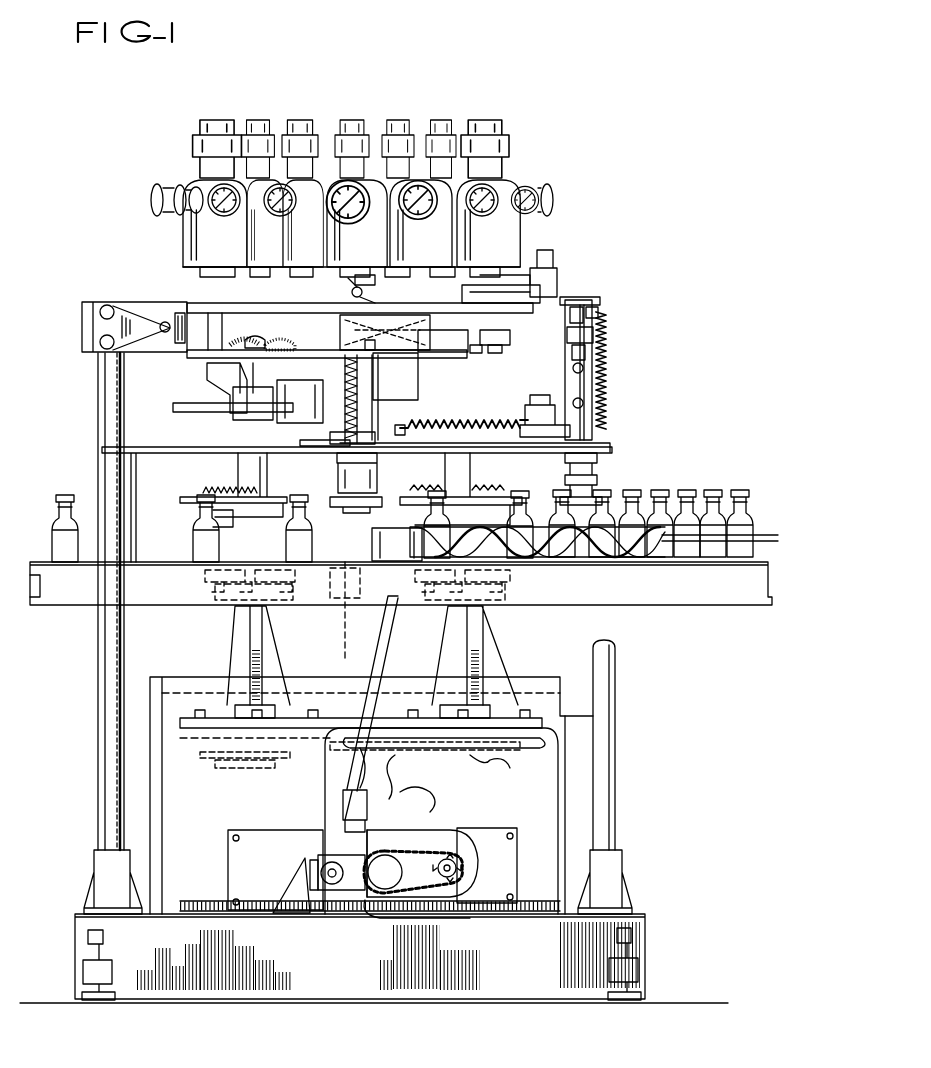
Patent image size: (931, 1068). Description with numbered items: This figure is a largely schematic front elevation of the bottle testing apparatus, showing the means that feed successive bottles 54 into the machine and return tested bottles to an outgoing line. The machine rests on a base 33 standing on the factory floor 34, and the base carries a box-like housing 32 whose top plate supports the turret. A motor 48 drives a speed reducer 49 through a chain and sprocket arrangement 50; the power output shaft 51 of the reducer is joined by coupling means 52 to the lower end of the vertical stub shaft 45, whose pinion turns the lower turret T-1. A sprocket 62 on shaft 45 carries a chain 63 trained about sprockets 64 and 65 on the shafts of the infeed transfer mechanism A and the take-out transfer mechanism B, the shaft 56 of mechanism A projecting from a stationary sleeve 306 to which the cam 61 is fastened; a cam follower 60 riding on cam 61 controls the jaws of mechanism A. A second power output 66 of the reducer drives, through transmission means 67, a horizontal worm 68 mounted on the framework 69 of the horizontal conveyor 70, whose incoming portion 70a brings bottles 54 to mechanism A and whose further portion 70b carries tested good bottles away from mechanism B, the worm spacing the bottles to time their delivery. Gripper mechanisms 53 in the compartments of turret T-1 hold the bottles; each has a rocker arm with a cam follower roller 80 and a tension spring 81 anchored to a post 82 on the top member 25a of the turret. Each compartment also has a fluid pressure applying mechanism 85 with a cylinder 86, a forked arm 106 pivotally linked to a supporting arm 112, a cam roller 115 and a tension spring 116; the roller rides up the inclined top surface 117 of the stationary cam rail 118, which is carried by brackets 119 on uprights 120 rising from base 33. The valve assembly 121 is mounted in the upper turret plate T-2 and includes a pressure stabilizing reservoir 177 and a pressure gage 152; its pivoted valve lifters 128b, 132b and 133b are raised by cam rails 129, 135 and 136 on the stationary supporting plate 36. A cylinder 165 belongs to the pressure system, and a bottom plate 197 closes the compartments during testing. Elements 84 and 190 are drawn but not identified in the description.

The pressure gage 152 is at (151, 201).
The pressure stabilizing reservoir 177 is at (193, 248).
The inclined top surface 117 is at (148, 301).
The upper turret plate T-2 is at (198, 303).
The bottom plate 197 is at (213, 345).
The cam rail 136 is at (237, 343).
The cam rail 135 is at (258, 347).
The supporting plate 36 is at (287, 350).
The brackets 119 is at (140, 333).
The stationary cam rail 118 is at (170, 352).
The actuating bar 84 is at (185, 409).
The lower turret T-1 is at (179, 446).
The bracket arm 190 is at (232, 418).
The top member 25a is at (153, 453).
The bottles 54 is at (52, 526).
The further portion of conveyor 70b is at (158, 562).
The cam follower 60 is at (205, 586).
The stationary cam 61 is at (217, 600).
The forked arm 106 is at (365, 294).
The cam roller 115 is at (600, 313).
The supporting arm 112 is at (378, 334).
The cylinder 165 is at (568, 271).
The valve lifter 128b is at (452, 354).
The tension coil spring 116 is at (360, 378).
The fluid pressure applying mechanism 85 is at (390, 401).
The anchoring post 82 is at (405, 428).
The tension coil spring 81 is at (510, 425).
The cam rail 129 is at (495, 347).
The valve lifter 133b is at (500, 340).
The valve lifter 132b is at (505, 348).
The cam follower roller 80 is at (540, 411).
The valve assembly 121 is at (529, 280).
The cylinder 86 is at (585, 390).
The gripper mechanisms 53 is at (393, 491).
The infeed transfer mechanism A is at (506, 479).
The take-out transfer mechanism B is at (210, 480).
The horizontal conveyor 70 is at (343, 557).
The rotary horizontal worm 68 is at (560, 560).
The incoming portion of conveyor 70a is at (767, 556).
The supporting framework 69 is at (682, 604).
The stationary vertical sleeve 306 is at (262, 660).
The transmission means 67 is at (390, 649).
The uprights 120 is at (98, 790).
The shaft 56 is at (215, 738).
The sprocket 65 is at (222, 755).
The sprocket 62 is at (330, 750).
The vertical stub shaft 45 is at (365, 762).
The chain 63 is at (402, 765).
The sprocket 64 is at (508, 760).
The box-like housing 32 is at (560, 769).
The coupling means 52 is at (405, 800).
The motor 48 is at (445, 845).
The second power output 66 is at (333, 845).
The power output shaft 51 is at (378, 842).
The chain and sprocket arrangement 50 is at (471, 867).
The speed reducer 49 is at (398, 897).
The machine base 33 is at (340, 970).
The factory floor 34 is at (330, 1005).